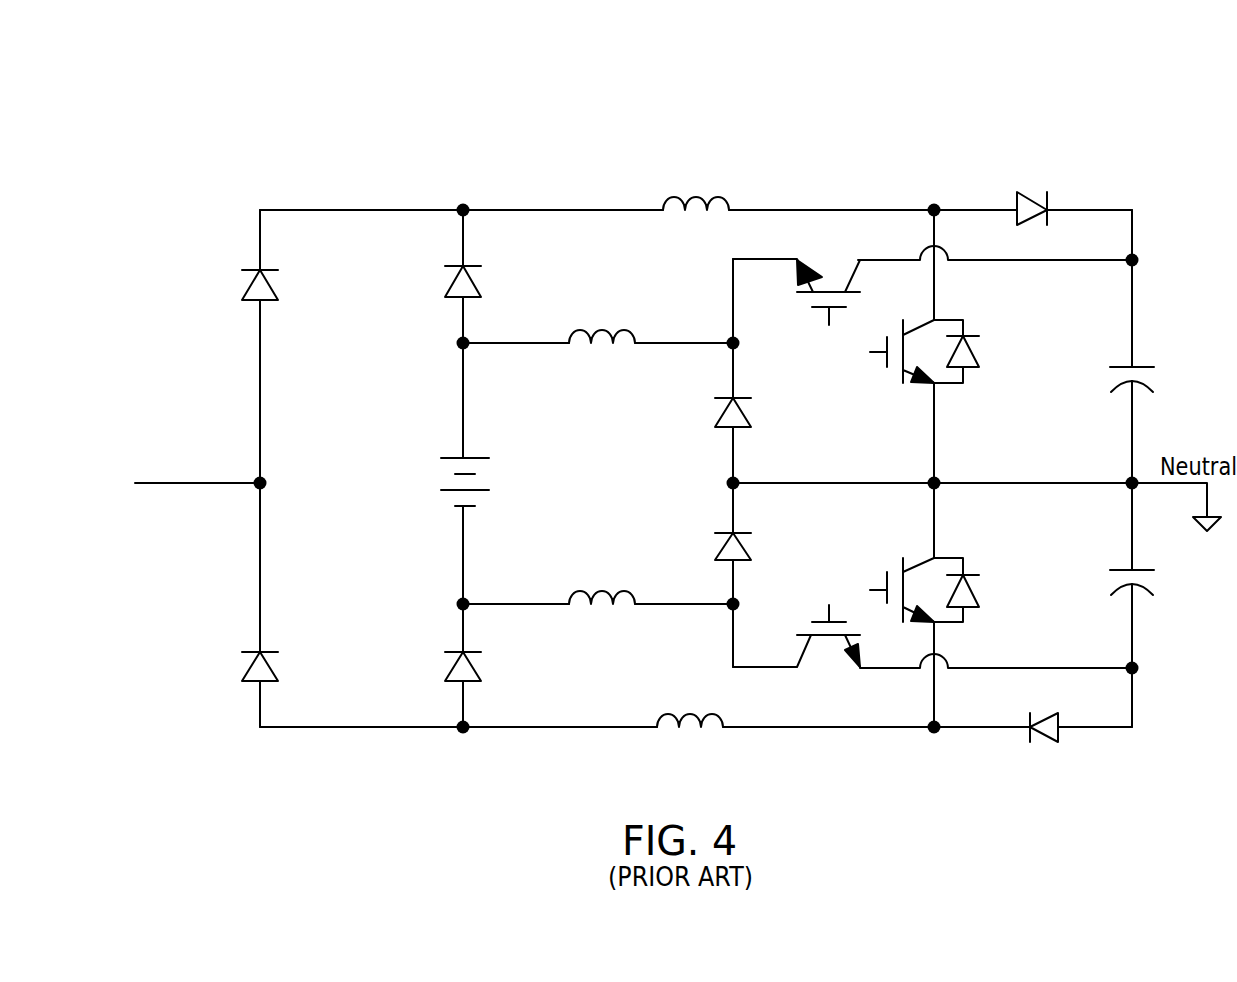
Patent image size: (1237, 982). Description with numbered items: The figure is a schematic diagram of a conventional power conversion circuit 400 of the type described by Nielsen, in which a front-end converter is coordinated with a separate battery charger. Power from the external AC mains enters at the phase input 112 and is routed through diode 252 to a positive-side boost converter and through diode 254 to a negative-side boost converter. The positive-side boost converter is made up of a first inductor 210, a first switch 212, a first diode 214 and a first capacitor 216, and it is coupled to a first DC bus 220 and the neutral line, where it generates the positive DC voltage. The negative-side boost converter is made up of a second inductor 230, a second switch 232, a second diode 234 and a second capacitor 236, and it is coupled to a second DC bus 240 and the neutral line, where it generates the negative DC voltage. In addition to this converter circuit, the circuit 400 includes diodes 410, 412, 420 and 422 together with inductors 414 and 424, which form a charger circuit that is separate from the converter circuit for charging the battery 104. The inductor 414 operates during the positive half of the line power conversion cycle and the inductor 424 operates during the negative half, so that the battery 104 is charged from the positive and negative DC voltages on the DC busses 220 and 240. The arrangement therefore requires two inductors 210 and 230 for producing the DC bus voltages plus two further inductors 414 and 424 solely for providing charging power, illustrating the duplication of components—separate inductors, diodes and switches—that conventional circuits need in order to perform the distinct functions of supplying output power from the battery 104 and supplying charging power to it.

The circuit 400 is at (893, 132).
The phase input 112 is at (197, 484).
The diode 252 is at (260, 272).
The diode 254 is at (260, 681).
The diode 410 is at (463, 268).
The diode 420 is at (463, 652).
The diode 412 is at (733, 398).
The diode 422 is at (733, 533).
The battery 104 is at (483, 458).
The first inductor 210 is at (717, 183).
The inductor 414 is at (597, 318).
The inductor 424 is at (597, 579).
The second inductor 230 is at (680, 728).
The first diode 214 is at (1047, 200).
The second diode 234 is at (1028, 738).
The first DC bus 220 is at (1132, 231).
The second DC bus 240 is at (1132, 697).
The first switch 212 is at (950, 318).
The second switch 232 is at (950, 556).
The first capacitor 216 is at (1142, 383).
The second capacitor 236 is at (1142, 588).